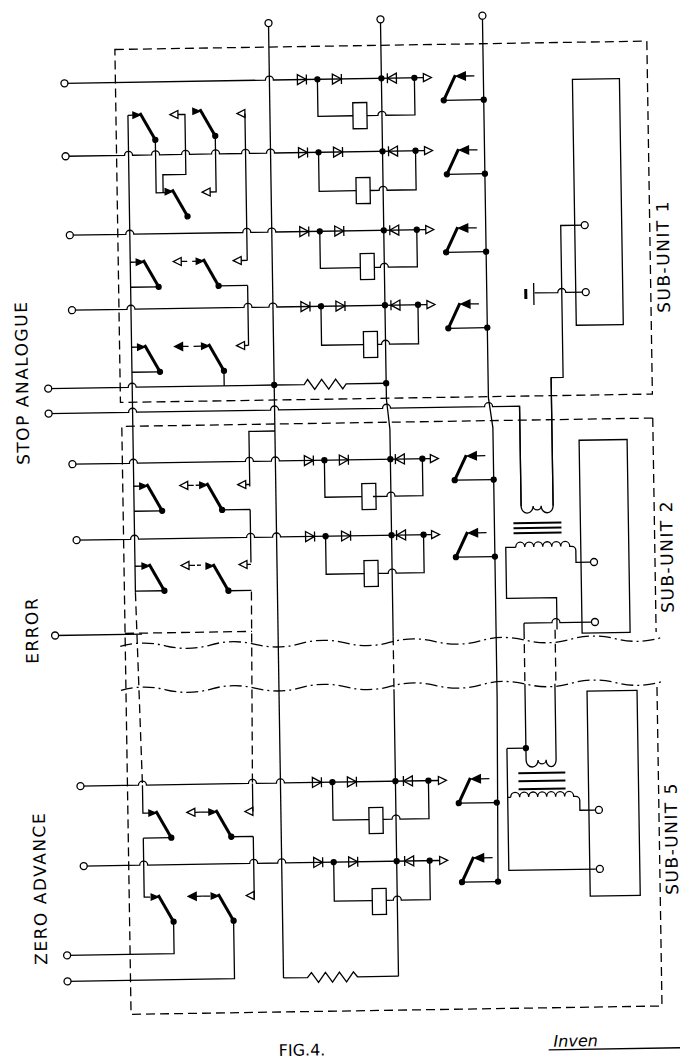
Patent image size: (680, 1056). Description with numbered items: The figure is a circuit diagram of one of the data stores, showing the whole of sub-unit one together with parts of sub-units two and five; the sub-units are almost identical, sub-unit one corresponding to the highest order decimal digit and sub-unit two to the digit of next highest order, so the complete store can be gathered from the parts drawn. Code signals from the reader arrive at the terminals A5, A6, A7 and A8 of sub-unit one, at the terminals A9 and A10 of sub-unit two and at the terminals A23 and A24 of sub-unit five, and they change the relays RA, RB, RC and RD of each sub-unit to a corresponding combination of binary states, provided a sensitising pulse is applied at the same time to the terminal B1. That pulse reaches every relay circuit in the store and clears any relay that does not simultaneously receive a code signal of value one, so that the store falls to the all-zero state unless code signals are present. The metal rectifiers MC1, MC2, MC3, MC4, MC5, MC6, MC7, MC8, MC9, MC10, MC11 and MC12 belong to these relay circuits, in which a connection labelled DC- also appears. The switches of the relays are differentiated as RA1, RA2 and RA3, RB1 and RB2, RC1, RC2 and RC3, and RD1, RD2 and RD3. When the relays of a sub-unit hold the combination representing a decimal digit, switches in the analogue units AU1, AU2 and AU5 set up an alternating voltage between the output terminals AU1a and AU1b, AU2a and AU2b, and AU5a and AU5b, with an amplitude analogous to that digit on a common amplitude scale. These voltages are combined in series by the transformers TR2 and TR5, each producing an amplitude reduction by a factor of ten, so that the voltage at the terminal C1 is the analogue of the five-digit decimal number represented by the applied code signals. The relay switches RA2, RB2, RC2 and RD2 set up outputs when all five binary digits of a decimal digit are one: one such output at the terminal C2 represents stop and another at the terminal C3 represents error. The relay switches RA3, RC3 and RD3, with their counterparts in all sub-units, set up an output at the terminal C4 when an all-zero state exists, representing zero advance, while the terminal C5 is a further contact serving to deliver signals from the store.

The sensitising pulse terminal B1 is at (401, 493).
The negative DC supply rail DC- is at (504, 444).
The code signal terminal A5 is at (237, 93).
The code signal terminal A6 is at (239, 166).
The code signal terminal A7 is at (241, 244).
The code signal terminal A8 is at (243, 320).
The code signal terminal A9 is at (245, 474).
The code signal terminal A10 is at (247, 550).
The code signal terminal A23 is at (253, 795).
The code signal terminal A24 is at (255, 875).
The analogue output terminal C1 is at (282, 457).
The stop output terminal C2 is at (157, 377).
The error output terminal C3 is at (93, 648).
The zero advance output terminal C4 is at (116, 940).
The data store output contact C5 is at (145, 966).
The metal rectifier MC1 is at (400, 76).
The metal rectifier MC2 is at (351, 259).
The metal rectifier MC3 is at (294, 260).
The metal rectifier MC4 is at (400, 150).
The metal rectifier MC5 is at (345, 148).
The metal rectifier MC6 is at (308, 146).
The metal rectifier MC7 is at (400, 229).
The metal rectifier MC8 is at (345, 227).
The metal rectifier MC9 is at (308, 226).
The metal rectifier MC10 is at (401, 305).
The metal rectifier MC11 is at (345, 301).
The metal rectifier MC12 is at (308, 300).
The relay RA is at (350, 102).
The relay RB is at (350, 177).
The relay RC is at (350, 255).
The relay RD is at (364, 349).
The relay switch RA1 is at (455, 100).
The relay switch RA2 is at (218, 94).
The relay switch RA3 is at (159, 94).
The relay switch RB1 is at (457, 174).
The relay switch RB2 is at (167, 212).
The relay switch RC1 is at (455, 252).
The relay switch RC2 is at (224, 254).
The relay switch RC3 is at (164, 254).
The relay switch RD1 is at (456, 328).
The relay switch RD2 is at (224, 334).
The relay switch RD3 is at (161, 334).
The analogue unit AU1 is at (600, 322).
The analogue unit output terminal AU1a is at (585, 226).
The analogue unit output terminal AU1b is at (584, 300).
The analogue unit AU2 is at (612, 443).
The analogue unit output terminal AU2a is at (607, 552).
The analogue unit output terminal AU2b is at (608, 611).
The analogue unit AU5 is at (614, 887).
The analogue unit output terminal AU5a is at (611, 799).
The analogue unit output terminal AU5b is at (612, 859).
The transformer TR2 is at (547, 503).
The transformer TR5 is at (551, 776).